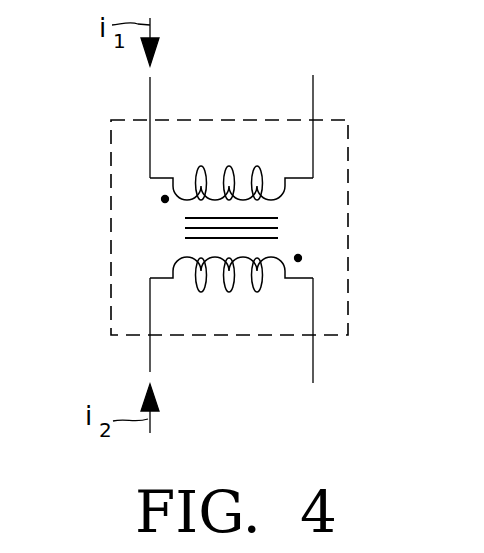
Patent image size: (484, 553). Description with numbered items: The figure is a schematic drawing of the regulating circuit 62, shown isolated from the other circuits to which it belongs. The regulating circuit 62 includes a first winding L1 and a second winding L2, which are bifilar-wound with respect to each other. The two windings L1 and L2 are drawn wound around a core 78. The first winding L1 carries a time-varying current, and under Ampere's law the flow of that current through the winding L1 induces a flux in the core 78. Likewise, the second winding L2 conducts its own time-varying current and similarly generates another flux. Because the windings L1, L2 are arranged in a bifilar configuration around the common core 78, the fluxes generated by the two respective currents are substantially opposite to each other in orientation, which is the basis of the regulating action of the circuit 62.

The regulating circuit 62 is at (348, 215).
The core 78 is at (185, 228).
The first winding L1 is at (231, 165).
The second winding L2 is at (231, 293).